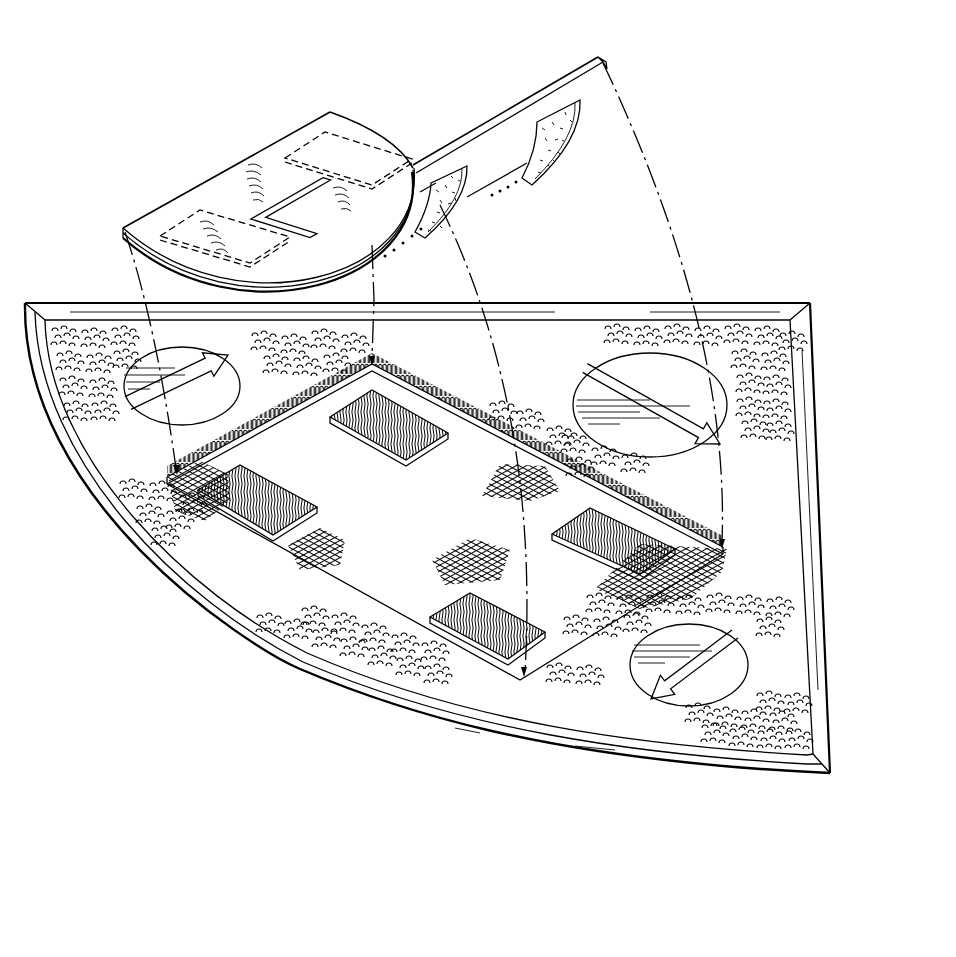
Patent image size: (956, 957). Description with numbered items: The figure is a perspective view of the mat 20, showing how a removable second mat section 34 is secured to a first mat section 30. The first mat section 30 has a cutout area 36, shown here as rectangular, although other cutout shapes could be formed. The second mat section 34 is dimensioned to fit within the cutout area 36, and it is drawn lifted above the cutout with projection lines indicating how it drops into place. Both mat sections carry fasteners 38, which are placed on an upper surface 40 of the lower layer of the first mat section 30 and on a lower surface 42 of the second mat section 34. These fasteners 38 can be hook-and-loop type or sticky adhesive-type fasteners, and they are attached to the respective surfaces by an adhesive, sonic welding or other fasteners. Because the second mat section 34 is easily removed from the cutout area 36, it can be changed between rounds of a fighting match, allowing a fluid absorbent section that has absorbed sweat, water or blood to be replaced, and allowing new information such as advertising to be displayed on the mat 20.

The mat 20 is at (113, 237).
The first mat section 30 is at (744, 303).
The second mat section 34 is at (222, 173).
The cutout area 36 is at (382, 592).
The fasteners 38 is at (478, 630).
The upper surface 40 is at (418, 590).
The lower surface 42 is at (490, 148).